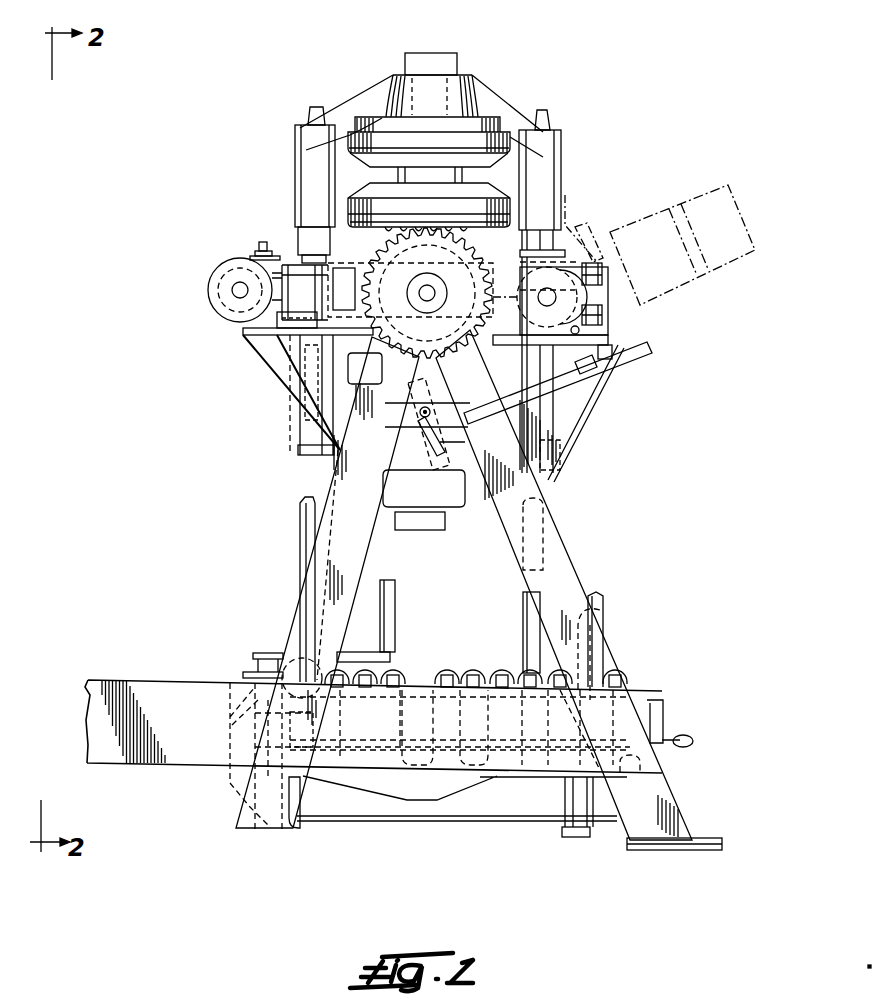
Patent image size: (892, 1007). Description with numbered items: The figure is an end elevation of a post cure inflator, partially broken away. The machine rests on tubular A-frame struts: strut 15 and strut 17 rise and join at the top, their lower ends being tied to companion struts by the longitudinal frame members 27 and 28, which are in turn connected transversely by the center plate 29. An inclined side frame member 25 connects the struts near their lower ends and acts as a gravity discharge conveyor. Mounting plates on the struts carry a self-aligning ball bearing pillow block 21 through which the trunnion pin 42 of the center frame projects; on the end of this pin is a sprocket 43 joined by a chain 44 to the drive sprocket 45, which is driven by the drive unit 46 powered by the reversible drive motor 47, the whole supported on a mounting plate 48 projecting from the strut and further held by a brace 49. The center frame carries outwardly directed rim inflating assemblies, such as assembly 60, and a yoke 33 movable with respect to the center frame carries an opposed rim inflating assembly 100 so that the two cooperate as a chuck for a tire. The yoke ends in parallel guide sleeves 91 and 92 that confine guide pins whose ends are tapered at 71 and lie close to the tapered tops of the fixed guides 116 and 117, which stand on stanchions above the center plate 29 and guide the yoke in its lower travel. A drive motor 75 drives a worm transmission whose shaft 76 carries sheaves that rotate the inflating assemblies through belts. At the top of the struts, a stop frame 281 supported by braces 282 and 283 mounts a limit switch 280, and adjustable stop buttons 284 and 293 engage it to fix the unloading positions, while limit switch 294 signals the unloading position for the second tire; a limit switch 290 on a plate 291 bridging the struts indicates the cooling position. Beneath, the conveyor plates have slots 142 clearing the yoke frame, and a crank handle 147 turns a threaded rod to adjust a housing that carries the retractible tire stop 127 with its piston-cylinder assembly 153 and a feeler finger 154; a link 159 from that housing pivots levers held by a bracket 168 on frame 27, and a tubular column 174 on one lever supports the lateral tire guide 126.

The tire rim inflating assembly 100 is at (468, 79).
The yoke 33 is at (497, 99).
The tapered end 71 is at (549, 121).
The rim inflating assembly 60 is at (352, 193).
The self-aligning ball bearing pillow block 21 is at (373, 253).
The trunnion pin 42 is at (410, 292).
The drive motor 75 is at (208, 292).
The shaft 76 is at (263, 242).
The stop frame 281 is at (292, 323).
The limit switch 294 is at (262, 356).
The brace 282 is at (275, 382).
The guide sleeve 92 is at (293, 440).
The sprocket 43 is at (408, 360).
The limit switch 290 is at (420, 436).
The plate 291 is at (487, 495).
The strut 17 is at (362, 540).
The A-frame strut 15 is at (560, 521).
The chain 44 is at (540, 264).
The drive sprocket 45 is at (612, 283).
The drive unit 46 is at (581, 219).
The adjustable stop button 293 is at (600, 258).
The reversible drive motor 47 is at (690, 290).
The mounting plate 48 is at (651, 349).
The adjustable stop button 284 is at (612, 357).
The limit switch 280 is at (590, 374).
The brace 49 is at (586, 410).
The brace 283 is at (560, 421).
The guide sleeve 91 is at (549, 446).
The fixed guide 117 is at (300, 531).
The lateral tire guide 126 is at (395, 603).
The fixed guide 116 is at (523, 601).
The retractible tire stop 127 is at (604, 606).
The feeler finger 154 is at (603, 641).
The frame member 25 is at (178, 760).
The crank handle 147 is at (682, 735).
The tubular column 174 is at (234, 680).
The bracket 168 is at (230, 730).
The link 159 is at (358, 712).
The slot 142 is at (438, 719).
The frame member 27 is at (300, 829).
The center plate 29 is at (412, 822).
The piston-cylinder assembly 153 is at (566, 823).
The frame member 28 is at (626, 841).